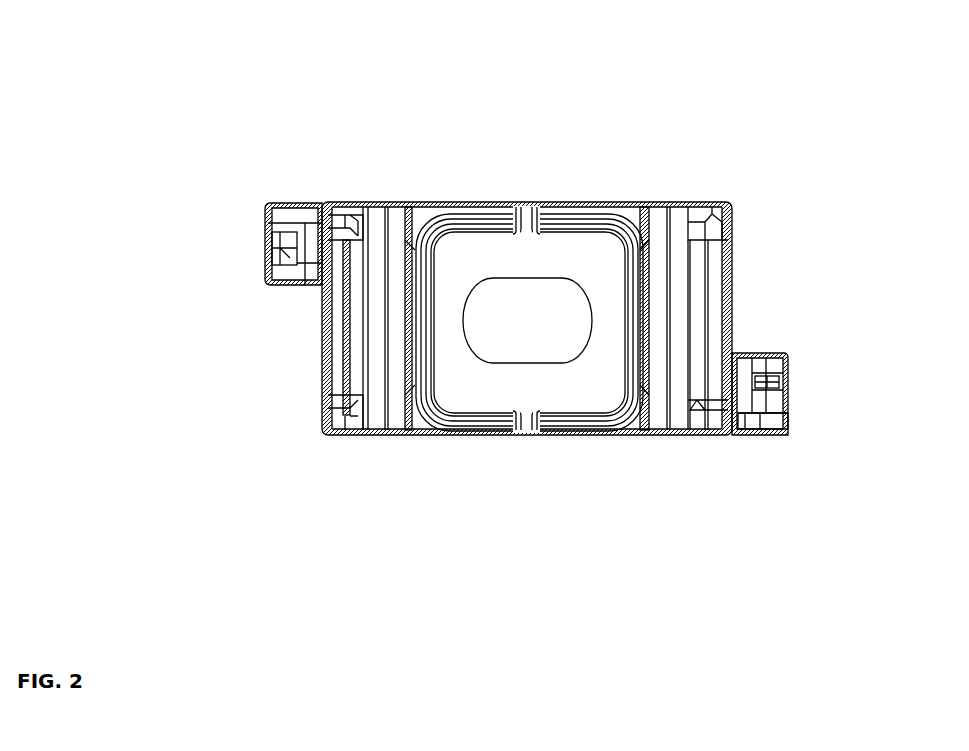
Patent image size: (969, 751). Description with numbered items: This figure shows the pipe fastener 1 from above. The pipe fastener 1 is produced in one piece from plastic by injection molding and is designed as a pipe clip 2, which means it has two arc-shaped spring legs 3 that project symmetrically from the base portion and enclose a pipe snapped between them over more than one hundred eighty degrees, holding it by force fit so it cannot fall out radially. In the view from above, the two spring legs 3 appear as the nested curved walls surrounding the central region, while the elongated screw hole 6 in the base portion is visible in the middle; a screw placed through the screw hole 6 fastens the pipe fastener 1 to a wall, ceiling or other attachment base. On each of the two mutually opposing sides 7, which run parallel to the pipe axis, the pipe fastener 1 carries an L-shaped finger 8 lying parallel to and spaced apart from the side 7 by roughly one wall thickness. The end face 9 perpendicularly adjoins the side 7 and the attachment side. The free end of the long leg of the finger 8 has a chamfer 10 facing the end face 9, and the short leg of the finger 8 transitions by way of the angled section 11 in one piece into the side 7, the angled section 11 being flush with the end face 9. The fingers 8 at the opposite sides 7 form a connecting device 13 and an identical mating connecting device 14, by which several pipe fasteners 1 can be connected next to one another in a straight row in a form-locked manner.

The pipe fastener 1 is at (501, 284).
The pipe clip 2 is at (513, 284).
The spring legs 3 is at (378, 313).
The screw hole 6 is at (527, 318).
The sides 7 is at (734, 263).
The finger 8 is at (827, 438).
The end face 9 is at (495, 441).
The chamfer 10 is at (772, 388).
The angled section 11 is at (760, 420).
The connecting device 13 is at (827, 438).
The mating connecting device 14 is at (252, 249).